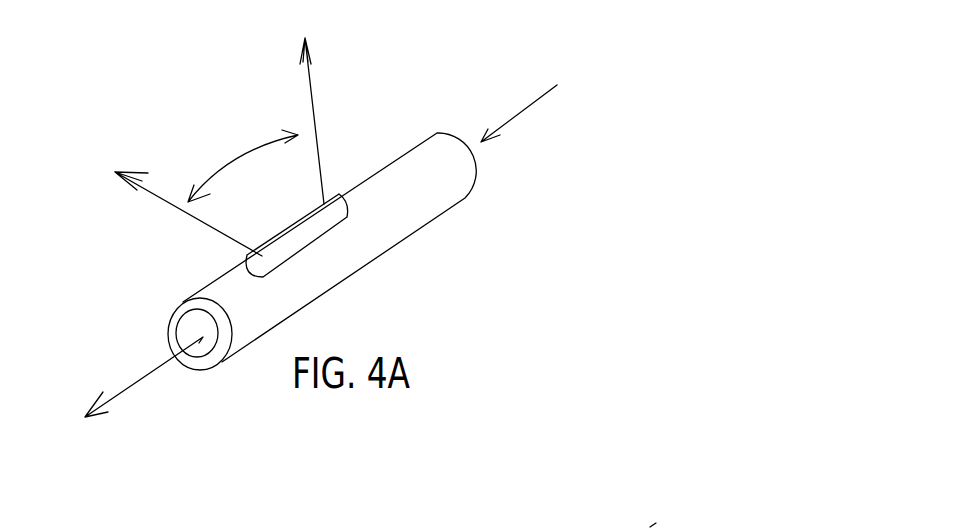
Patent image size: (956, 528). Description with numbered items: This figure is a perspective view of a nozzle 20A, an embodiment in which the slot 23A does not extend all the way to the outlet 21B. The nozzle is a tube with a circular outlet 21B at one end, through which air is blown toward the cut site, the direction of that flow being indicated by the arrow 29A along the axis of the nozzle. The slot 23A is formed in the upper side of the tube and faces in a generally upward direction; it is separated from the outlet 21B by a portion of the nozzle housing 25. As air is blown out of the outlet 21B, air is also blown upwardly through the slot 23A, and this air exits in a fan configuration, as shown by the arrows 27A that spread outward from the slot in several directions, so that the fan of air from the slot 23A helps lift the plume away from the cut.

The nozzle 20A is at (428, 263).
The outlet 21B is at (200, 352).
The slot 23A is at (334, 202).
The nozzle housing 25 is at (222, 288).
The arrows 27A is at (160, 190).
The longitudinal axis 29A is at (131, 386).